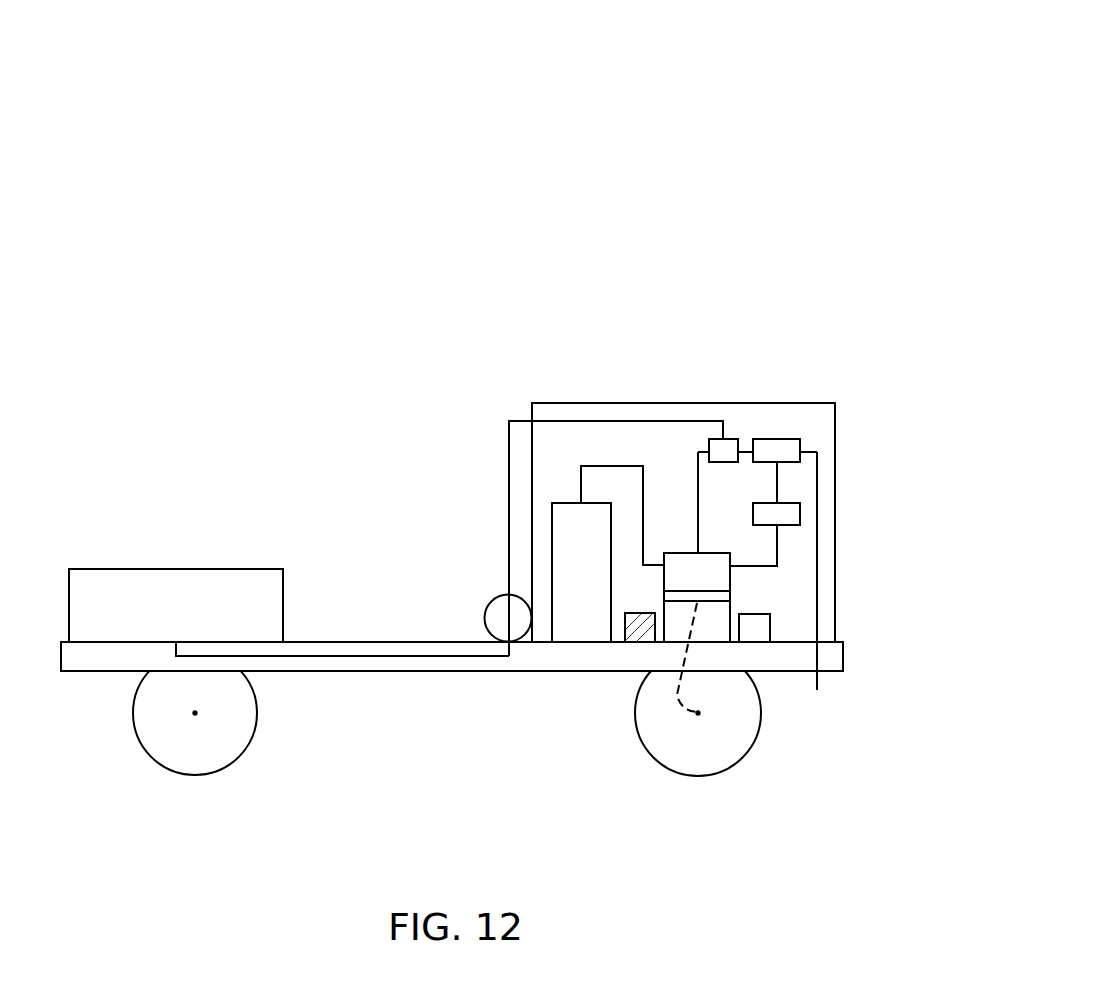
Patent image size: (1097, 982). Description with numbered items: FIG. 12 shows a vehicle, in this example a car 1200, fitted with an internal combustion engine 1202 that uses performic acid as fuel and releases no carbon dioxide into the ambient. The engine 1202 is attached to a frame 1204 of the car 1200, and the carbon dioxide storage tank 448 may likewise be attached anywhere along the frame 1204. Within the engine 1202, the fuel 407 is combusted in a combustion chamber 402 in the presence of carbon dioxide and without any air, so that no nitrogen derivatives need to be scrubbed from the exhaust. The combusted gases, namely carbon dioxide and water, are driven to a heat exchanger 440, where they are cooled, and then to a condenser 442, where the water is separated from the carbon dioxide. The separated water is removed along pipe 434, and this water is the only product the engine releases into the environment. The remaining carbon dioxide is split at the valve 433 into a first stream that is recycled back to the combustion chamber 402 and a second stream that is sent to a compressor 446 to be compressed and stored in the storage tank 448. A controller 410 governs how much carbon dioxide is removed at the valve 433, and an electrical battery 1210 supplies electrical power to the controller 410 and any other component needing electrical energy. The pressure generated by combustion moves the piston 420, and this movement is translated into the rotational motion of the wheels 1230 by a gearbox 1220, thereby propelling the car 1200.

The car 1200 is at (810, 48).
The engine 1202 is at (723, 282).
The frame 1204 is at (528, 657).
The electrical battery 1210 is at (637, 629).
The gearbox 1220 is at (677, 699).
The wheels 1230 is at (697, 776).
The combustion chamber 402 is at (733, 574).
The fuel 407 is at (602, 587).
The controller 410 is at (760, 627).
The piston 420 is at (710, 604).
The valve 433 is at (728, 440).
The pipe 434 is at (817, 623).
The heat exchanger 440 is at (803, 513).
The condenser 442 is at (803, 446).
The compressor 446 is at (485, 618).
The storage tank 448 is at (176, 569).